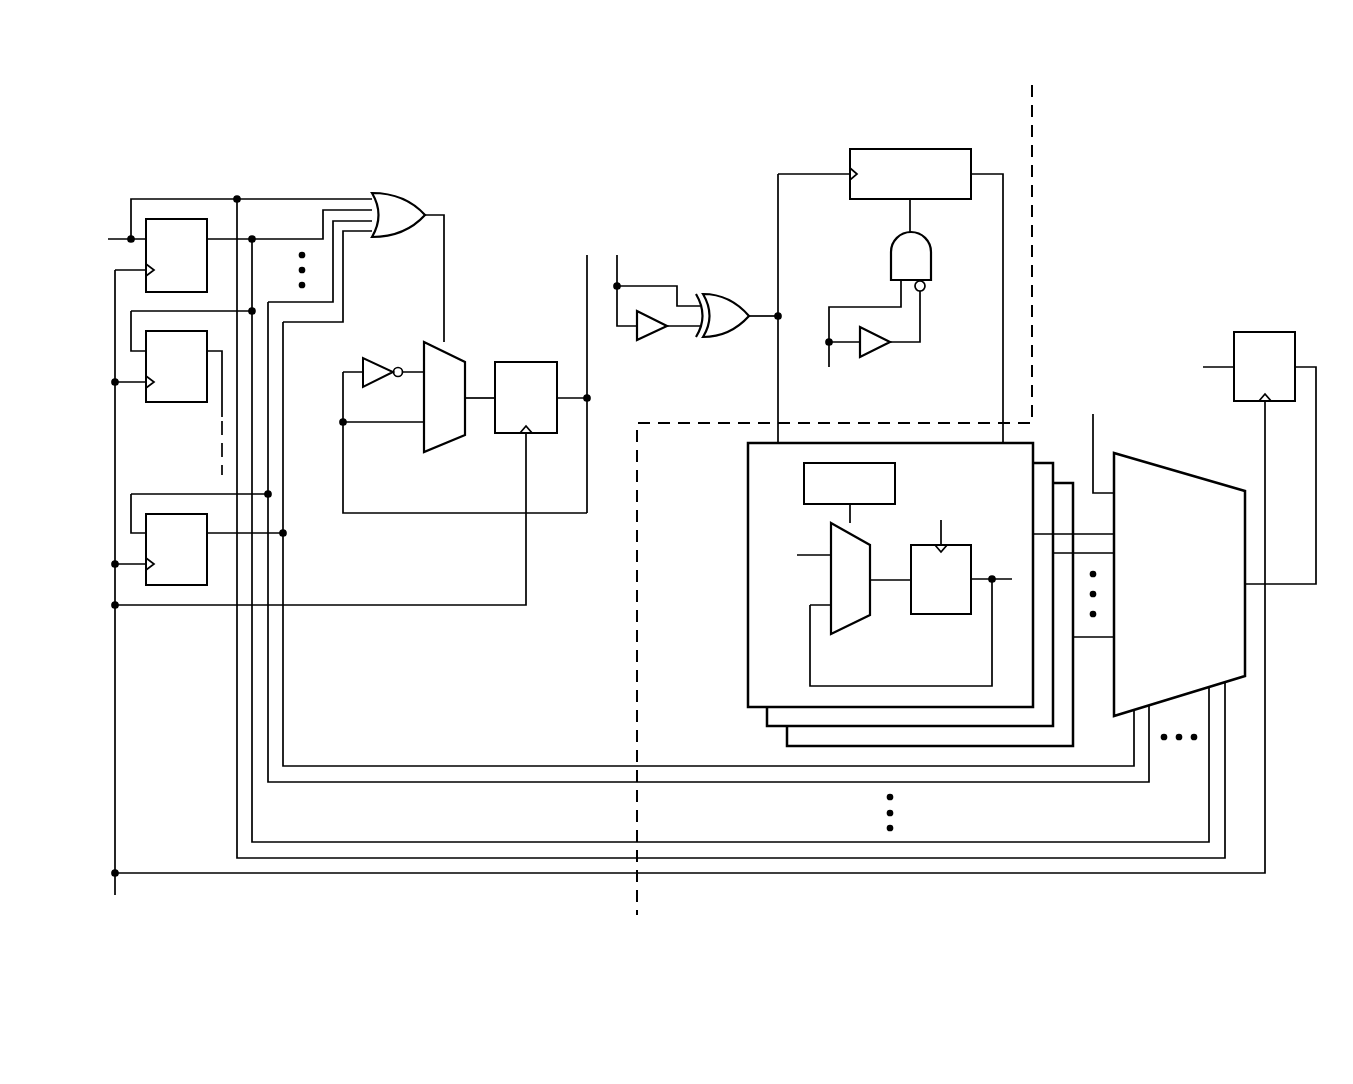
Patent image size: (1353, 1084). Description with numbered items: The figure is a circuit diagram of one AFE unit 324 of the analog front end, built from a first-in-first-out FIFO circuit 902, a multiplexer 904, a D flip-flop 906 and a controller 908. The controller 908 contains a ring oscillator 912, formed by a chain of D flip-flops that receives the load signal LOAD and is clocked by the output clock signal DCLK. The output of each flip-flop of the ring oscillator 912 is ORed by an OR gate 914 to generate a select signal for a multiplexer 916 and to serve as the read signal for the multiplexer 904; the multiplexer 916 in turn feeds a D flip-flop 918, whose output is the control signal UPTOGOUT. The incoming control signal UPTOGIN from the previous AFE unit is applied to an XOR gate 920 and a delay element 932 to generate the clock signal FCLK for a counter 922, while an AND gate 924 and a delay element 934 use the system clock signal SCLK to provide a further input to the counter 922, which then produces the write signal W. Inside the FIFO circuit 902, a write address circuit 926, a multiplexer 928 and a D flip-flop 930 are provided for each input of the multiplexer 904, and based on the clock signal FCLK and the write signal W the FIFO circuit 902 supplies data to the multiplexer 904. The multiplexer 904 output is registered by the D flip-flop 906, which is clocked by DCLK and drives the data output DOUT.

The AFE unit 324 is at (1266, 170).
The first-in-first-out (FIFO) circuit 902 is at (726, 597).
The multiplexer 904 is at (1179, 584).
The D flip-flop 906 is at (1262, 328).
The controller 908 is at (890, 269).
The ring oscillator 912 is at (177, 186).
The OR gate 914 is at (407, 194).
The multiplexer 916 is at (448, 455).
The D flip-flop 918 is at (523, 360).
The XOR gate 920 is at (737, 296).
The counter 922 is at (921, 148).
The AND gate 924 is at (889, 260).
The write address circuit 926 is at (899, 478).
The multiplexer 928 is at (852, 628).
The D flip-flop 930 is at (945, 615).
The delay element 932 is at (658, 342).
The delay element 934 is at (876, 350).